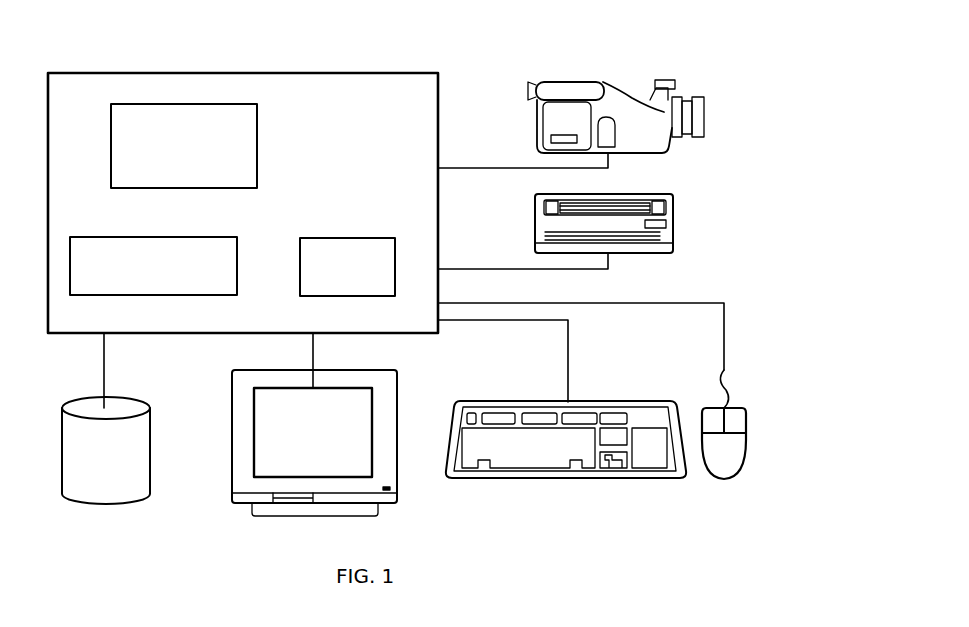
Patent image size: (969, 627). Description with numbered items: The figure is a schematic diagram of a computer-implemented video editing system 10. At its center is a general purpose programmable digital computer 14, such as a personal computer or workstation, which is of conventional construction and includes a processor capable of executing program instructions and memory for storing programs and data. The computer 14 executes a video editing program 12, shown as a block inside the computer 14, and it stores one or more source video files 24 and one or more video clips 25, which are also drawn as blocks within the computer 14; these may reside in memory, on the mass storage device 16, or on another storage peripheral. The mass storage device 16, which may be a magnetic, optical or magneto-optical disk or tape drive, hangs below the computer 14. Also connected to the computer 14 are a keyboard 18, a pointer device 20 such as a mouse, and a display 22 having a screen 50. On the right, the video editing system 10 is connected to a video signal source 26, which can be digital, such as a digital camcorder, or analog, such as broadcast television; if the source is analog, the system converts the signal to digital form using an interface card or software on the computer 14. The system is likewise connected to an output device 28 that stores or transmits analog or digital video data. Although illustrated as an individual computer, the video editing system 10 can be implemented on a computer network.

The video editing system 10 is at (626, 373).
The video editing program 12 is at (183, 104).
The computer 14 is at (440, 103).
The mass storage device 16 is at (113, 462).
The keyboard 18 is at (563, 479).
The pointer device 20 is at (722, 480).
The display 22 is at (339, 443).
The source video files 24 is at (183, 237).
The video clips 25 is at (345, 238).
The video signal source 26 is at (612, 86).
The output device 28 is at (673, 233).
The screen 50 is at (325, 442).